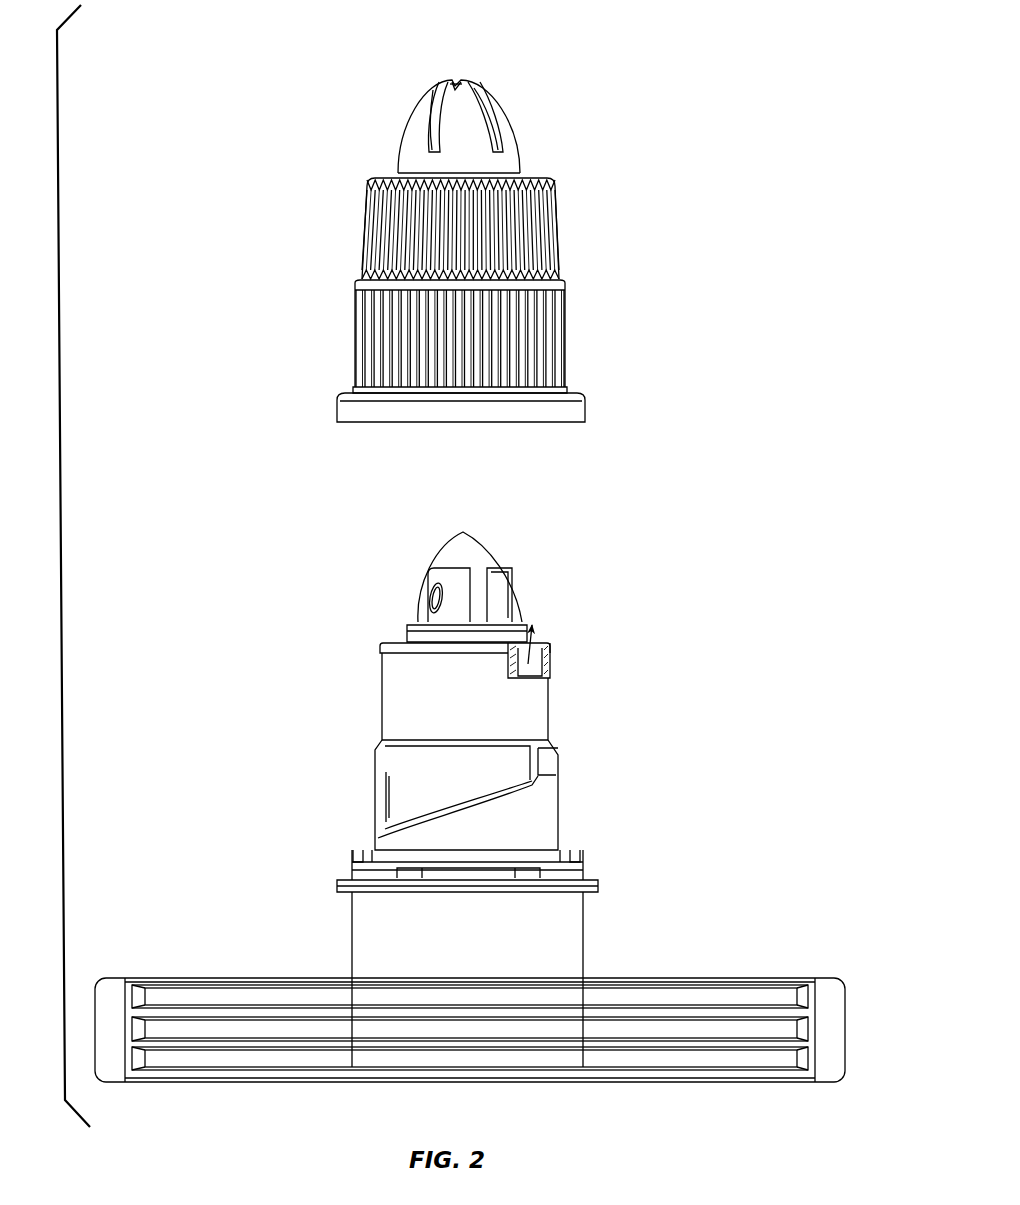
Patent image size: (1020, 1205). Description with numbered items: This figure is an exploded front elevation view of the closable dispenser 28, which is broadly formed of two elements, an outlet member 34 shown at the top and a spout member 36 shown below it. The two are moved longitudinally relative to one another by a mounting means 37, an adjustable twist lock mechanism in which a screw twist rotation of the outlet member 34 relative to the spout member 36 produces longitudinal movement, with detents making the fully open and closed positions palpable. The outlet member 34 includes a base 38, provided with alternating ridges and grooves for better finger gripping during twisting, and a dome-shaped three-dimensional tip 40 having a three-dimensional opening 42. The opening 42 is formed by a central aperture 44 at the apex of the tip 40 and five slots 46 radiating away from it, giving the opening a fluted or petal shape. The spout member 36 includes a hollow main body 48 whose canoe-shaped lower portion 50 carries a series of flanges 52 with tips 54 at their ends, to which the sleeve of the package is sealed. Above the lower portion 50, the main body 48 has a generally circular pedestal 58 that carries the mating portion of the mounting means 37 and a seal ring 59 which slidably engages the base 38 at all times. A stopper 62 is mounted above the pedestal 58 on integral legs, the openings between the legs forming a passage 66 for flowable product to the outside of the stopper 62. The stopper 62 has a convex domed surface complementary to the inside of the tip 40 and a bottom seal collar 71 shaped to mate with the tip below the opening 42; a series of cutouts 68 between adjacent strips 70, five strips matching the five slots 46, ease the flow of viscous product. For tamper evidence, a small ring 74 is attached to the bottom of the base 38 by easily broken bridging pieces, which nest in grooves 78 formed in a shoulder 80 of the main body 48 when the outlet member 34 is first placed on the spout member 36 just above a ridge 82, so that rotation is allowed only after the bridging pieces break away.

The closable dispenser 28 is at (729, 453).
The outlet member 34 is at (620, 225).
The spout member 36 is at (660, 762).
The mounting means 37 is at (328, 785).
The base 38 is at (567, 332).
The 3-D tip 40 is at (408, 125).
The 3-D opening 42 is at (458, 76).
The central aperture 44 is at (474, 80).
The slots 46 is at (438, 135).
The hollow main body 48 is at (352, 910).
The lower portion 50 is at (142, 978).
The flanges 52 is at (215, 1013).
The tips 54 is at (110, 1053).
The pedestal 58 is at (548, 718).
The seal ring 59 is at (382, 650).
The stopper 62 is at (497, 553).
The passage 66 is at (541, 641).
The cutouts 68 is at (455, 600).
The strips 70 is at (424, 600).
The bottom seal collar 71 is at (407, 635).
The ring 74 is at (583, 407).
The grooves 78 is at (358, 850).
The shoulder 80 is at (583, 864).
The ridge 82 is at (598, 885).